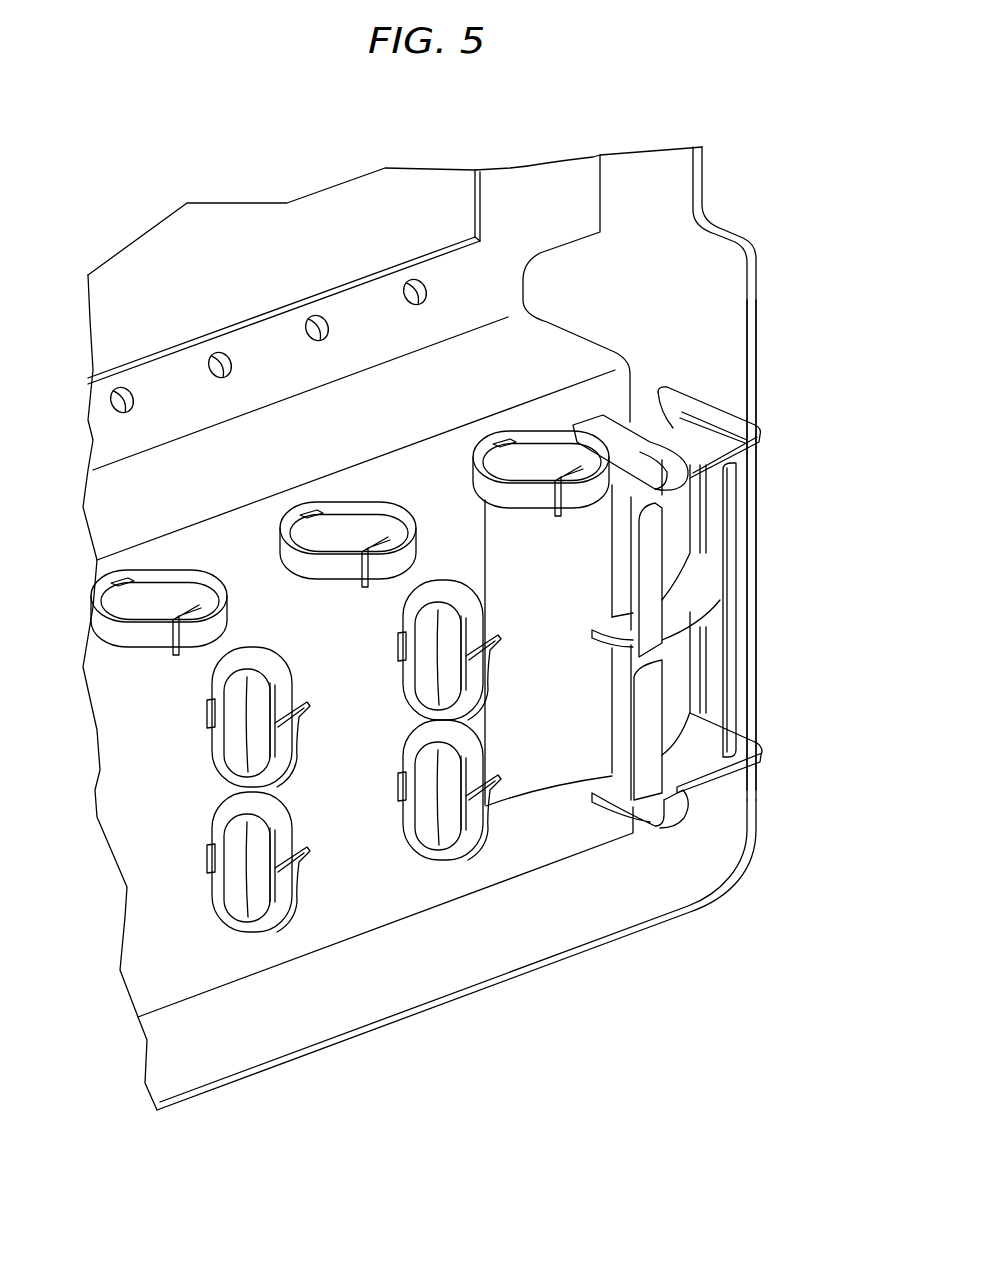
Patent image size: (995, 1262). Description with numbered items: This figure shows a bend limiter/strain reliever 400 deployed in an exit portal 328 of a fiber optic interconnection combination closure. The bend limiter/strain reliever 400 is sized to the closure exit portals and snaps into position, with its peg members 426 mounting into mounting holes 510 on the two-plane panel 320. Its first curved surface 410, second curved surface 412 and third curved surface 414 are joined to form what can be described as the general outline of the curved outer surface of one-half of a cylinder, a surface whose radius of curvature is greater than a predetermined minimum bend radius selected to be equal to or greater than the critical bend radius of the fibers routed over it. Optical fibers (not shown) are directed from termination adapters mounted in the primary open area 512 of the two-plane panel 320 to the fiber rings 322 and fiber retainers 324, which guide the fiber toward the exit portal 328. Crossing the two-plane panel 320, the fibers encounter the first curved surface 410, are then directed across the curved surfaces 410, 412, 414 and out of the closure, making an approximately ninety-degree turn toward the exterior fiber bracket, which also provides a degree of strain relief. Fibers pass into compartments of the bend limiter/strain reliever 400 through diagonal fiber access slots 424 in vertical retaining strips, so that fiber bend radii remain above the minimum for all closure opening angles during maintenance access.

The two-plane panel 320 is at (602, 115).
The primary open area 512 is at (342, 238).
The exit portal 328 is at (858, 672).
The fiber rings 322 is at (157, 587).
The fiber retainers 324 is at (270, 990).
The first curved surface 410 is at (550, 900).
The bend limiter/strain reliever 400 is at (822, 822).
The diagonal fiber access slots 424 is at (803, 522).
The third curved surface 414 is at (800, 597).
The second curved surface 412 is at (808, 643).
The mounting holes 510 is at (783, 352).
The peg members 426 is at (808, 448).